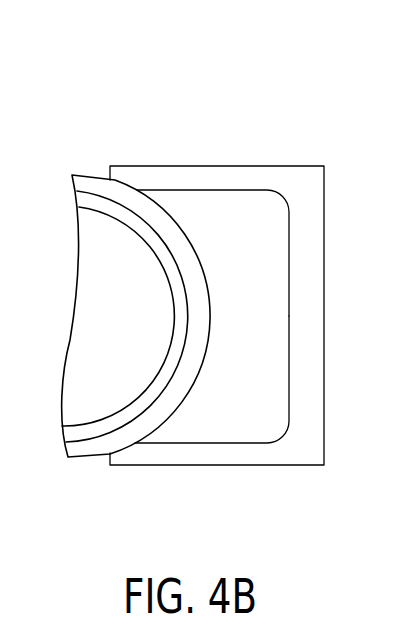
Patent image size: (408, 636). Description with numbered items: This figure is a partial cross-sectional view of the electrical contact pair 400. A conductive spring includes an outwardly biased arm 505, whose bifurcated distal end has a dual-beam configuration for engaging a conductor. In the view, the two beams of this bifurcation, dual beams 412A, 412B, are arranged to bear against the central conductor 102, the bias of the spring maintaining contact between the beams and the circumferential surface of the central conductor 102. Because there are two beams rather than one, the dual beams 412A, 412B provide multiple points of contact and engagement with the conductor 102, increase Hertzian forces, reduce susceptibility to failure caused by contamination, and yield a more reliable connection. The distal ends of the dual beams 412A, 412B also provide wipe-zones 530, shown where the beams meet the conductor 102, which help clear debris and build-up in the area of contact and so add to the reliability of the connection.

The electrical contact pair 400 is at (150, 88).
The arm 505 is at (310, 307).
The dual beam 412A is at (207, 458).
The dual beam 412B is at (217, 177).
The wipe-zone 530 is at (112, 178).
The central conductor 102 is at (78, 448).